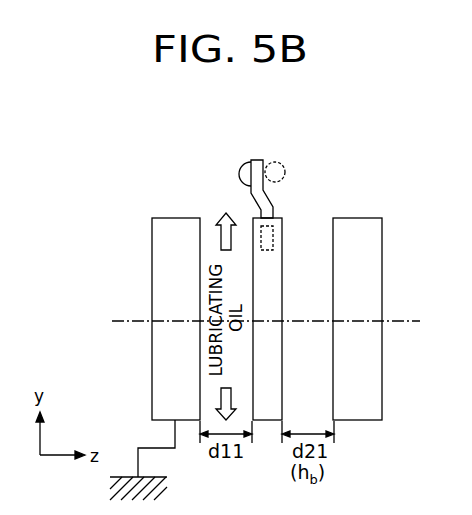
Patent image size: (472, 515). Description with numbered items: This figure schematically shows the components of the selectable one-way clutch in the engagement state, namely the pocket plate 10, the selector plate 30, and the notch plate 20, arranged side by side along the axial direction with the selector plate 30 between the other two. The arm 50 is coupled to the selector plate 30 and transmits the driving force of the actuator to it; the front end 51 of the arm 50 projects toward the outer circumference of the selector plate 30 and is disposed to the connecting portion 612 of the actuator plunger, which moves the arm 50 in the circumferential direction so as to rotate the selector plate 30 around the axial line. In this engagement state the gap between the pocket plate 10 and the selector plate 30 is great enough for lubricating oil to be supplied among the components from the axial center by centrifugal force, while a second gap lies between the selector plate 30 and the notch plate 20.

The pocket plate 10 is at (177, 218).
The notch plate 20 is at (357, 218).
The selector plate 30 is at (282, 272).
The arm 50 is at (268, 155).
The front end 51 is at (245, 169).
The connecting portion 612 is at (284, 164).